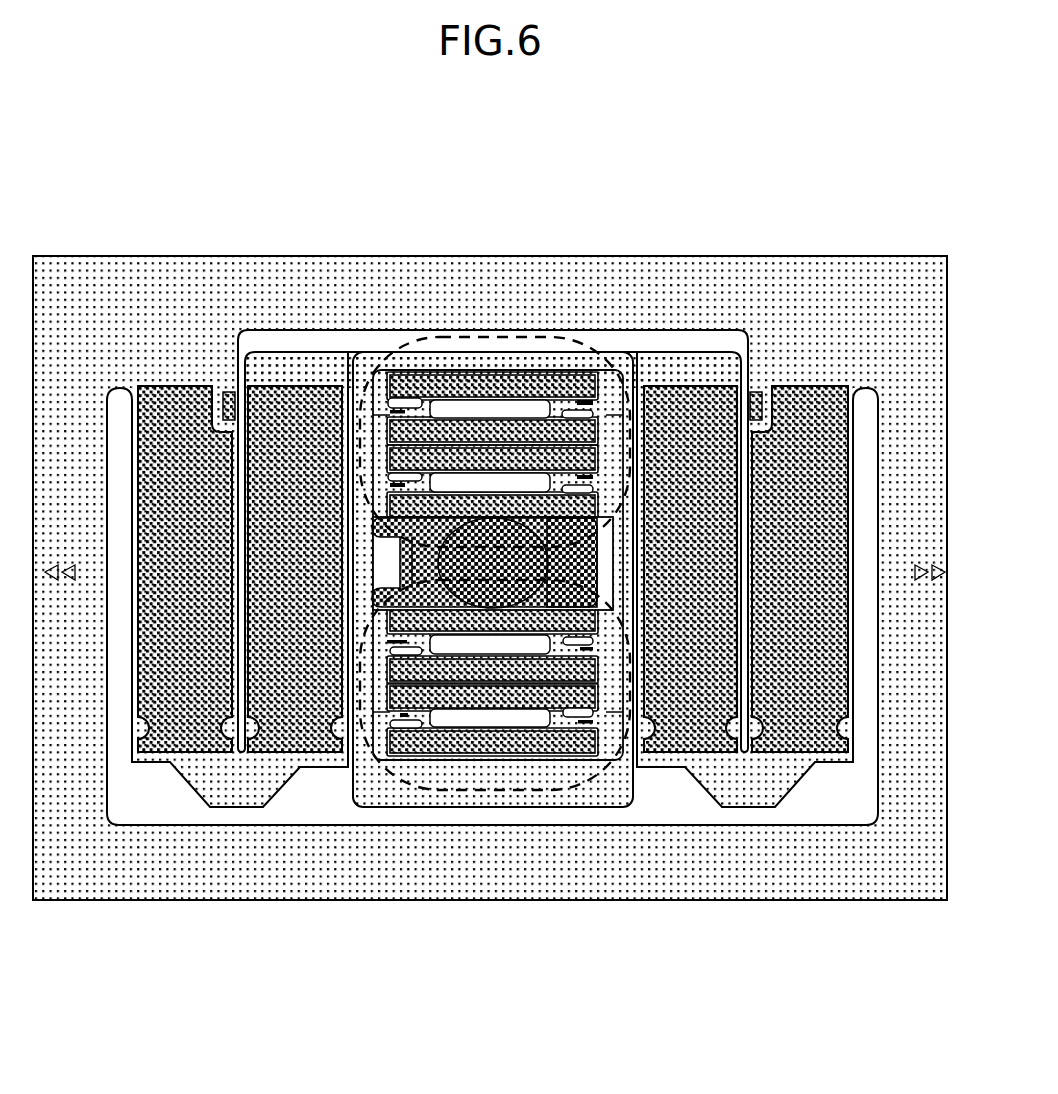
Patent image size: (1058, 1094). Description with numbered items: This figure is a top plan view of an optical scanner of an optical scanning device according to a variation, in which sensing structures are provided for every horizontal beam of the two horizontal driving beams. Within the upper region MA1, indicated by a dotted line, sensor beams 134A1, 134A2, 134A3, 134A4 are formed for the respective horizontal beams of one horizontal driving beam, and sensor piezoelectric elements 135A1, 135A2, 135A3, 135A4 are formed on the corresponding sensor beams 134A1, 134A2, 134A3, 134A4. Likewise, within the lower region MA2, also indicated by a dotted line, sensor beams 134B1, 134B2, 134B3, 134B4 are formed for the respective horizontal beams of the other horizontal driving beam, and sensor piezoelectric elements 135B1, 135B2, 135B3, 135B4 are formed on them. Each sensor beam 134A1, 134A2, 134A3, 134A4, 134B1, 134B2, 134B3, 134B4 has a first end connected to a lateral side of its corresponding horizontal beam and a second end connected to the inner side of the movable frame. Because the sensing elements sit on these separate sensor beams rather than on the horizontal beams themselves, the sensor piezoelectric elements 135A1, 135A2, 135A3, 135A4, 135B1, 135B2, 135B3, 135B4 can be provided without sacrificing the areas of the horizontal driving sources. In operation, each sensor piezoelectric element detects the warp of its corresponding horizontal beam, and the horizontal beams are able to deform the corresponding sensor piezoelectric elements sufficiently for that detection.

The sensor piezoelectric element 135A1 is at (598, 411).
The sensor piezoelectric element 135A2 is at (390, 483).
The sensor piezoelectric element 135A3 is at (594, 478).
The sensor piezoelectric element 135A4 is at (390, 410).
The sensor beam 134A1 is at (565, 477).
The sensor beam 134A2 is at (432, 486).
The sensor beam 134A3 is at (578, 403).
The sensor beam 134A4 is at (428, 411).
The sensor piezoelectric element 135B1 is at (594, 648).
The sensor piezoelectric element 135B2 is at (388, 642).
The sensor piezoelectric element 135B3 is at (600, 722).
The sensor piezoelectric element 135B4 is at (400, 716).
The sensor beam 134B1 is at (560, 643).
The sensor beam 134B2 is at (420, 648).
The sensor beam 134B3 is at (576, 723).
The sensor beam 134B4 is at (422, 722).
The region MA1 is at (493, 336).
The region MA2 is at (492, 790).